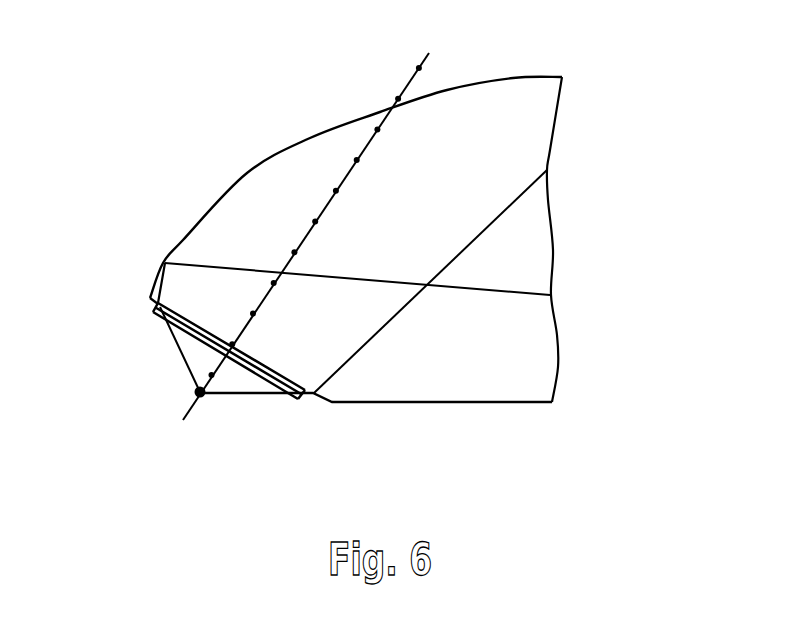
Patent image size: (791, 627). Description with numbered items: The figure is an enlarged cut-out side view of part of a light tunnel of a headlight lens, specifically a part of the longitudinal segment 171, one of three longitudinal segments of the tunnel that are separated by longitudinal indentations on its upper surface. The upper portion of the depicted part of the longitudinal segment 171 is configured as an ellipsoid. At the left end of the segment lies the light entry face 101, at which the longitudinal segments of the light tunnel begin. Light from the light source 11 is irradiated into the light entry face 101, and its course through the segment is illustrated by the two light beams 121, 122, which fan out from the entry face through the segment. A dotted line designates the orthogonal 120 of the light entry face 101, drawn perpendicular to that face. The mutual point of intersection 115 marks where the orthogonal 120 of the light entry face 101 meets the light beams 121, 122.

The longitudinal segment 171 is at (513, 78).
The orthogonal of the light entry face 120 is at (347, 172).
The light beam 121 is at (216, 263).
The light beam 122 is at (363, 347).
The light source 11 is at (203, 338).
The light entry face 101 is at (277, 388).
The mutual point of intersection 115 is at (203, 397).